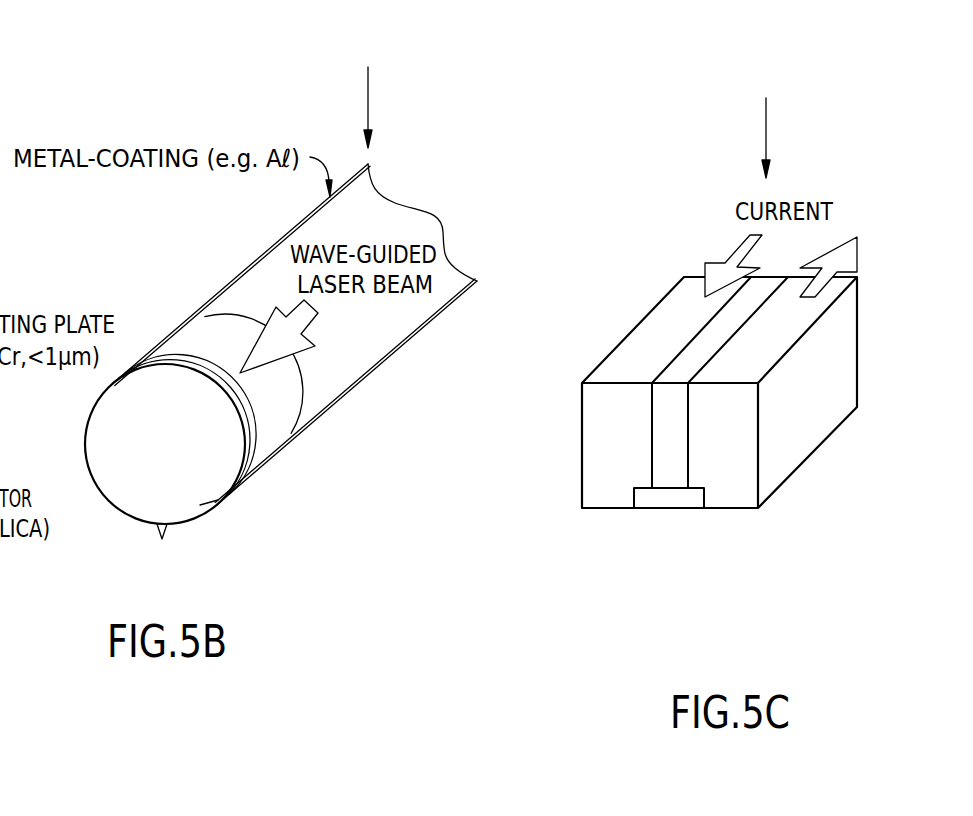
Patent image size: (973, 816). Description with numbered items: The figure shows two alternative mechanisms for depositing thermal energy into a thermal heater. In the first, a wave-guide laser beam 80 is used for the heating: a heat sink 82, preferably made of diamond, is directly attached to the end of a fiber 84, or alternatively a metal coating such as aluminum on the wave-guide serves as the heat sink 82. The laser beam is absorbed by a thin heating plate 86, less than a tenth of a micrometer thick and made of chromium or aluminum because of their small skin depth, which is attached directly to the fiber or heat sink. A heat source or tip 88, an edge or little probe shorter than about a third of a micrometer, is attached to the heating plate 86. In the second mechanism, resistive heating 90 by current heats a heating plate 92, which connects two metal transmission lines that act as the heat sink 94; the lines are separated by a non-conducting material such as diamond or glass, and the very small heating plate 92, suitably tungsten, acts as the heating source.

In FIG. 5B, the wave-guide laser beam 80 is at (374, 91).
In FIG. 5B, the heat sink 82 is at (207, 318).
In FIG. 5B, the fiber 84 is at (375, 334).
In FIG. 5B, the heating plate 86 is at (224, 498).
In FIG. 5B, the heat source or tip 88 is at (165, 535).
In FIG. 5C, the resistive heating 90 is at (778, 123).
In FIG. 5C, the heating plate 92 is at (671, 442).
In FIG. 5C, the heat sink 94 is at (782, 453).